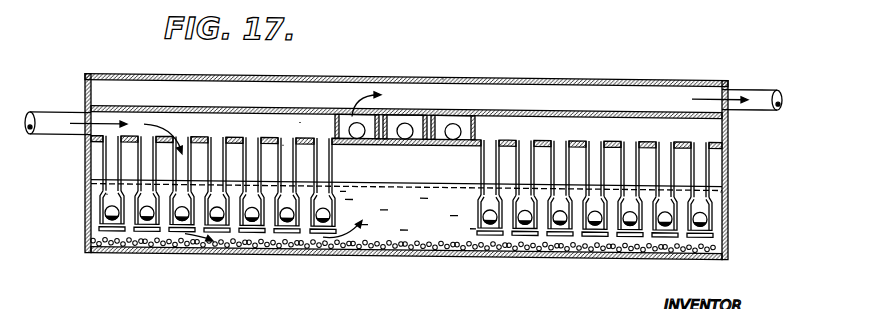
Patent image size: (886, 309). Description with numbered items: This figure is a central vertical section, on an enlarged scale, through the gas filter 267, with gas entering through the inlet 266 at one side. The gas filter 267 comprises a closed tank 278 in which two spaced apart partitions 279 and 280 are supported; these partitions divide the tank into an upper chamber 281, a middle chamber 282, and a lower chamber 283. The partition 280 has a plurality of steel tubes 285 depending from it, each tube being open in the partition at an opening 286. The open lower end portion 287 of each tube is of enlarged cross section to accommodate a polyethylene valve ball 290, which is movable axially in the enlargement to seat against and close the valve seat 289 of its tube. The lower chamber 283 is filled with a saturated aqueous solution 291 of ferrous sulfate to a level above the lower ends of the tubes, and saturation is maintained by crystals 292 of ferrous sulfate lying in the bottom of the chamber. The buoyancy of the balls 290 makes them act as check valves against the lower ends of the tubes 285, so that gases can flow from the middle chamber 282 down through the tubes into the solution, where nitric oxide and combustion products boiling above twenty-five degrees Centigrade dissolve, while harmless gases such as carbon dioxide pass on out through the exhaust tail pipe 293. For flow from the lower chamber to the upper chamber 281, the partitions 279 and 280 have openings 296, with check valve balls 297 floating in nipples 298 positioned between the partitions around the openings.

The inlet conduit 266 is at (47, 117).
The gas filter 267 is at (443, 79).
The closed tank 278 is at (289, 257).
The partition 279 is at (584, 110).
The partition 280 is at (612, 142).
The upper chamber 281 is at (245, 92).
The middle chamber 282 is at (300, 124).
The lower chamber 283 is at (410, 218).
The tubes 285 is at (107, 165).
The tube opening 286 is at (283, 147).
The open lower end portion 287 is at (103, 205).
The valve seats 289 is at (107, 198).
The valve balls 290 is at (106, 216).
The saturated aqueous solution of ferrous sulfate 291 is at (372, 185).
The crystals of ferrous sulfate 292 is at (465, 246).
The exhaust tail pipe 293 is at (757, 83).
The openings 296 is at (458, 112).
The check valve balls 297 is at (405, 121).
The nipples 298 is at (475, 122).